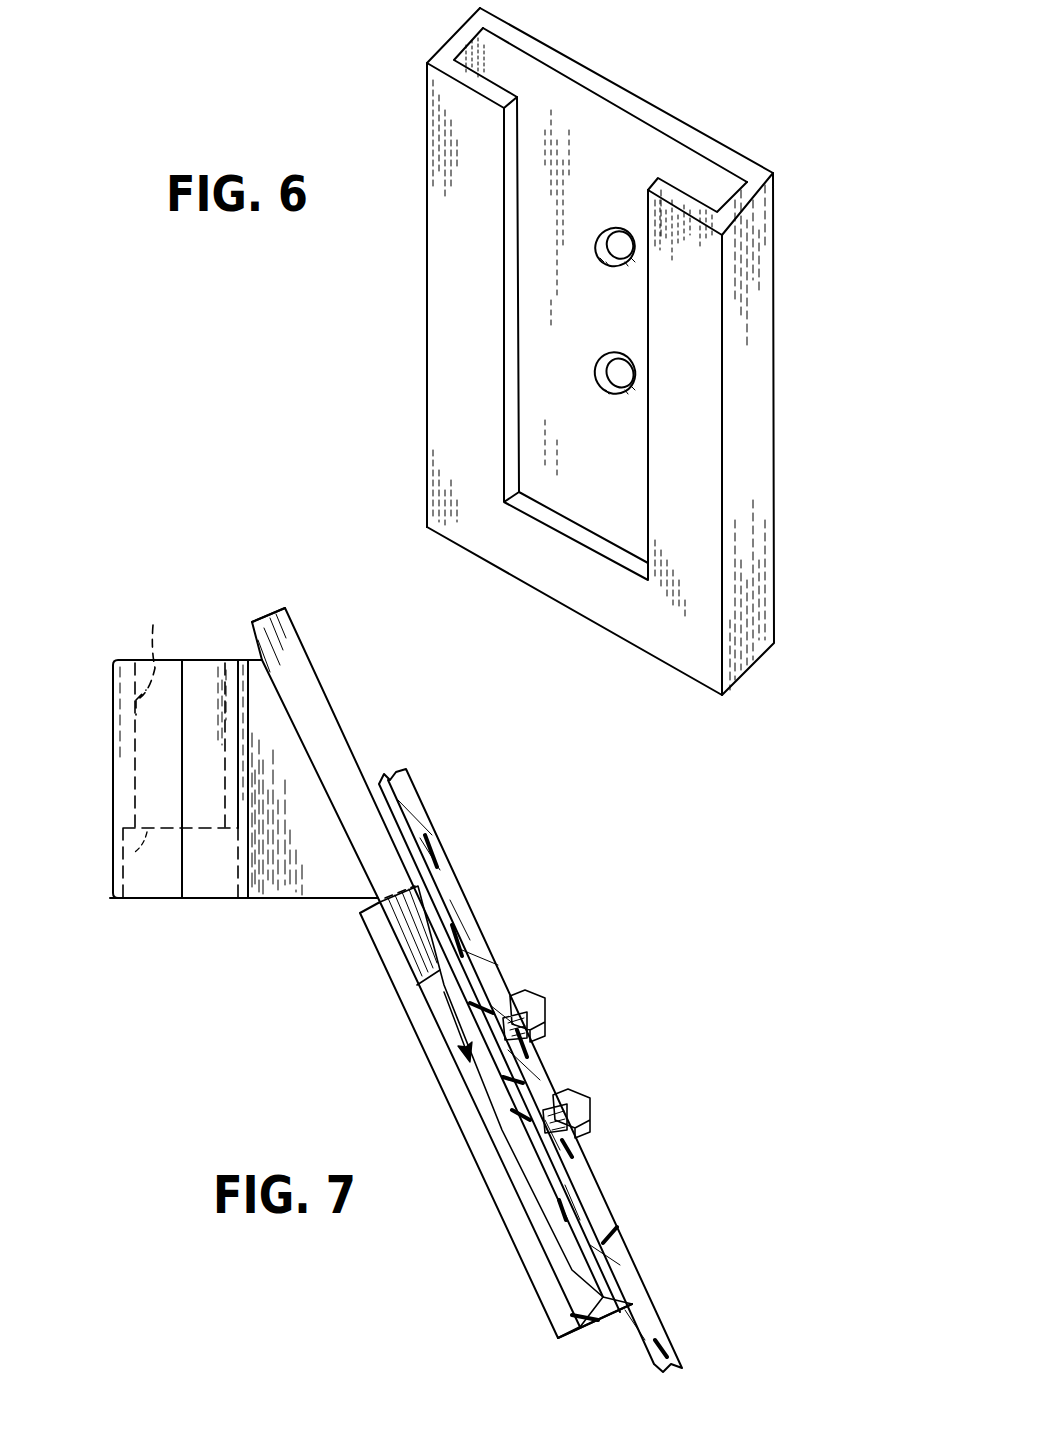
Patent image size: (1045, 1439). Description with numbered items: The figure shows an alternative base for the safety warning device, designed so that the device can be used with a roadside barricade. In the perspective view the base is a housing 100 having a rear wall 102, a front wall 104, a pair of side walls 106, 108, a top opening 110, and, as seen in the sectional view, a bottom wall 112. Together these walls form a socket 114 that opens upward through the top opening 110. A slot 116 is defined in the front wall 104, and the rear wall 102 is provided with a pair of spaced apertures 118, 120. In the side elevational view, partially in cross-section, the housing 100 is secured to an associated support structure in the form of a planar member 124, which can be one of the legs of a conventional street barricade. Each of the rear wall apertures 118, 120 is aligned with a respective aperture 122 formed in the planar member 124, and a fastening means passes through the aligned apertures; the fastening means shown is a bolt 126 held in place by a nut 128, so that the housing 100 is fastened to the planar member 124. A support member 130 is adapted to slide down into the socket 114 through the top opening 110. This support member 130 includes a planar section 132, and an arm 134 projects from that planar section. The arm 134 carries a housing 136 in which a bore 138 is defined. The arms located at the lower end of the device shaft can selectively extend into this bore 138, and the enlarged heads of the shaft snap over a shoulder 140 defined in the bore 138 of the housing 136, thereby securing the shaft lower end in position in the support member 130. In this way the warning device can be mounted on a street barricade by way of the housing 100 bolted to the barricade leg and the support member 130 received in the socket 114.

In FIG. 6, the housing 100 is at (427, 405).
In FIG. 6, the rear wall 102 is at (690, 135).
In FIG. 6, the front wall 104 is at (626, 626).
In FIG. 6, the side wall 106 is at (758, 406).
In FIG. 6, the side wall 108 is at (460, 37).
In FIG. 6, the top opening 110 is at (503, 60).
In FIG. 7, the bottom wall 112 is at (610, 1320).
In FIG. 6, the socket 114 is at (713, 190).
In FIG. 7, the socket 114 is at (570, 1277).
In FIG. 6, the slot 116 is at (513, 349).
In FIG. 7, the slot 116 is at (518, 1228).
In FIG. 6, the aperture 118 is at (617, 248).
In FIG. 6, the aperture 120 is at (617, 375).
In FIG. 7, the aperture 122 is at (503, 1018).
In FIG. 7, the planar member 124 is at (413, 825).
In FIG. 7, the bolt 126 is at (537, 1127).
In FIG. 7, the nut 128 is at (578, 1137).
In FIG. 7, the support member 130 is at (287, 605).
In FIG. 7, the planar section 132 is at (313, 712).
In FIG. 7, the arm 134 is at (312, 880).
In FIG. 7, the housing 136 is at (125, 783).
In FIG. 7, the bore 138 is at (153, 628).
In FIG. 7, the shoulder 140 is at (123, 860).